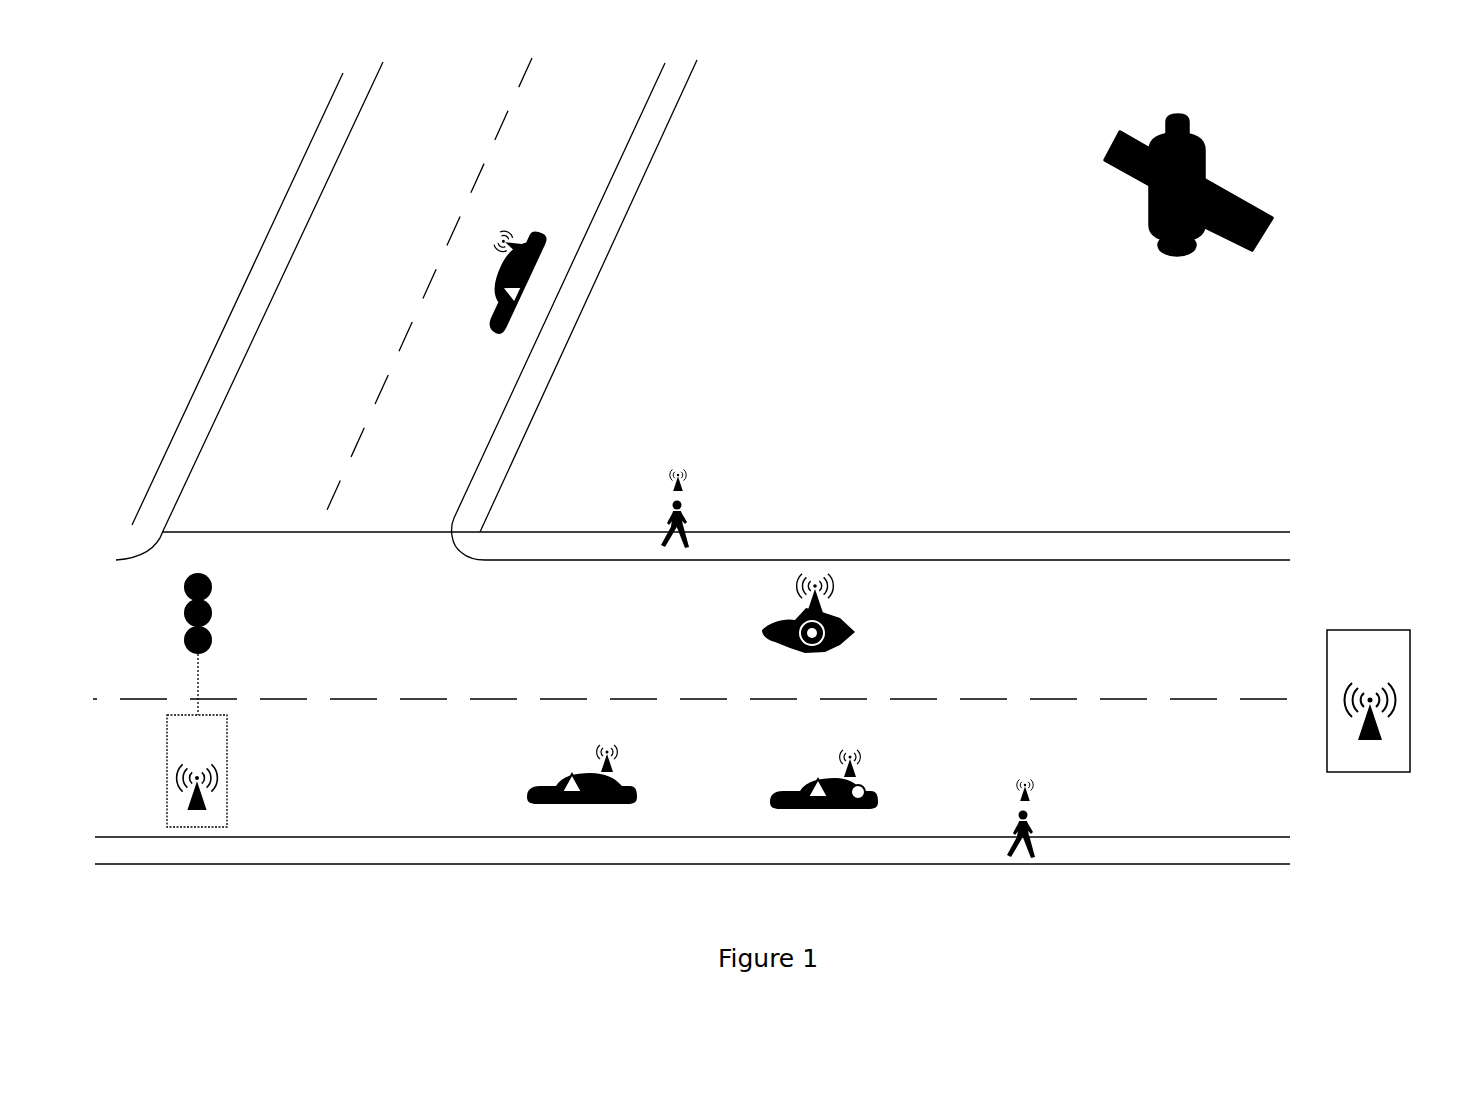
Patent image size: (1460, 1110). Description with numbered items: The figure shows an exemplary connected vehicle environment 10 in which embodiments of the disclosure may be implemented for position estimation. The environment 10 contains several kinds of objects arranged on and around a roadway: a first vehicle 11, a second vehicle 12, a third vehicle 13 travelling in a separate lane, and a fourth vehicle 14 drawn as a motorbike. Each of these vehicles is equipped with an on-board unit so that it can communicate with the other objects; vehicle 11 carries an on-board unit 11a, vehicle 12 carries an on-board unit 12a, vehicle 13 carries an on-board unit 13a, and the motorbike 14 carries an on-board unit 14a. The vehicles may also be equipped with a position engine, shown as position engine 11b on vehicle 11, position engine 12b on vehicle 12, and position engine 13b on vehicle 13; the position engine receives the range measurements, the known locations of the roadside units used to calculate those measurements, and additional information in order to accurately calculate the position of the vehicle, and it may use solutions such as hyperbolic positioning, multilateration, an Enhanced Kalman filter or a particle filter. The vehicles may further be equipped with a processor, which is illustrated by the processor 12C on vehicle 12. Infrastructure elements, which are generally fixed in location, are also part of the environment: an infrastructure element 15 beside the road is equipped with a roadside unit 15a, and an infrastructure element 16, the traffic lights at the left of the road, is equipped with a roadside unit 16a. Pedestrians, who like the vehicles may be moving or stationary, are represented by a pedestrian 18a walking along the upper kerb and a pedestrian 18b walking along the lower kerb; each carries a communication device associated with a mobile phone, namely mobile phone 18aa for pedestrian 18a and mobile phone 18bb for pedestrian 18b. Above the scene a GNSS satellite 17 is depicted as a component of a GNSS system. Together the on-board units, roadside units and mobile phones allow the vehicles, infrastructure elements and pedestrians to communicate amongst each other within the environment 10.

The connected vehicle environment 10 is at (832, 292).
The vehicle 11 is at (582, 759).
The on-board unit 11a is at (603, 743).
The position engine 11b is at (559, 766).
The vehicle 12 is at (841, 792).
The on-board unit 12a is at (848, 749).
The position engine 12b is at (804, 774).
The processor 12C is at (858, 799).
The vehicle 13 is at (510, 257).
The on-board unit 13a is at (510, 219).
The position engine 13b is at (487, 285).
The vehicle 14 is at (800, 628).
The on-board unit 14a is at (836, 594).
The infrastructure element 15 is at (1385, 701).
The roadside unit 15a is at (1369, 697).
The infrastructure element 16 is at (189, 700).
The roadside unit 16a is at (197, 771).
The GNSS satellite 17 is at (1215, 178).
The pedestrian 18a is at (662, 494).
The mobile phone 18aa is at (678, 465).
The pedestrian 18b is at (1029, 820).
The mobile phone 18bb is at (1056, 788).